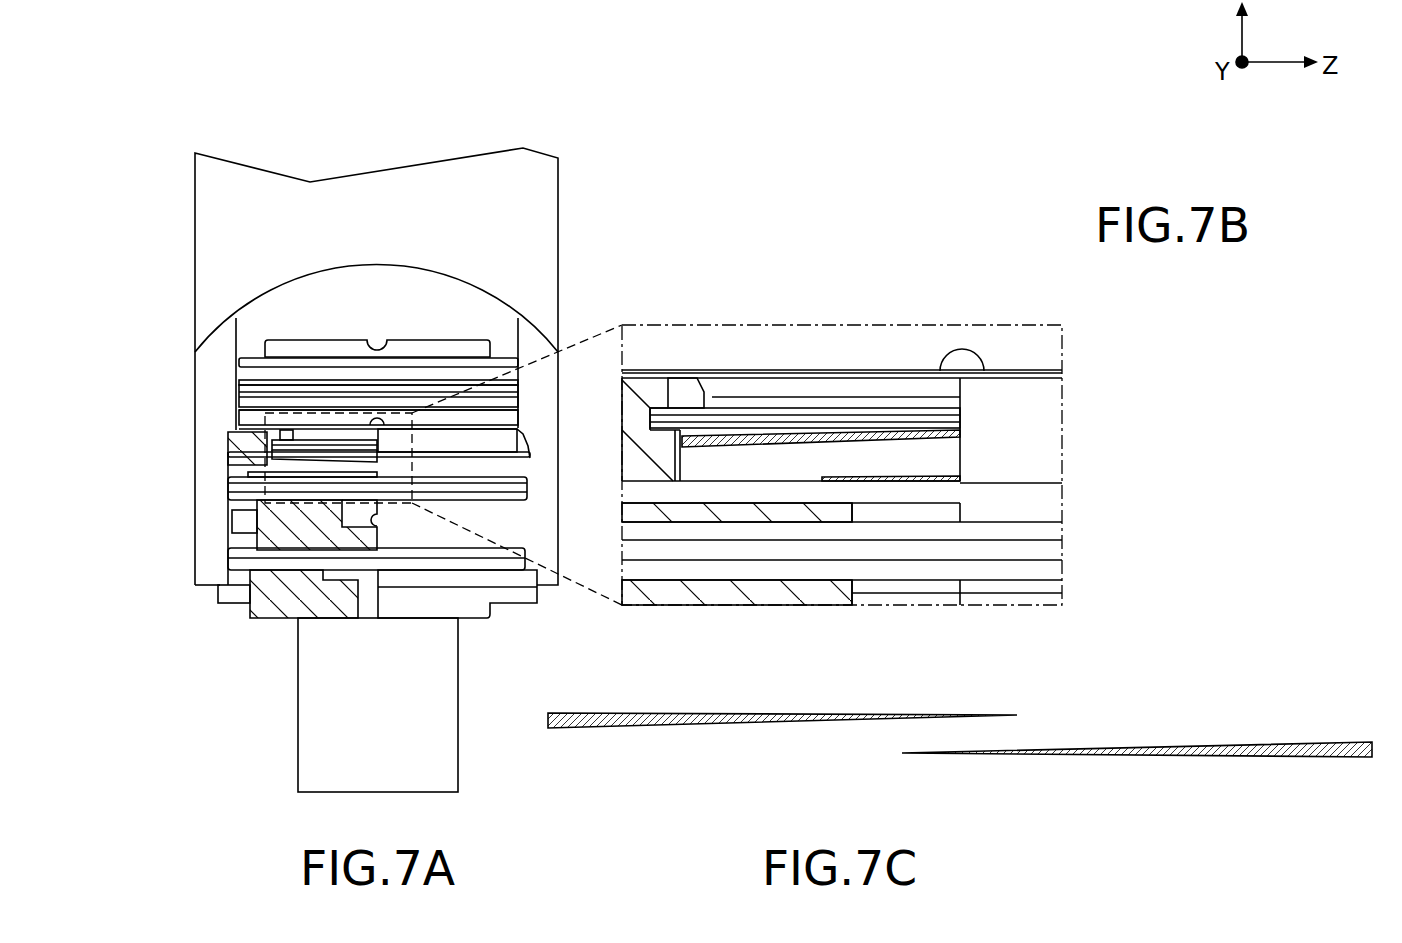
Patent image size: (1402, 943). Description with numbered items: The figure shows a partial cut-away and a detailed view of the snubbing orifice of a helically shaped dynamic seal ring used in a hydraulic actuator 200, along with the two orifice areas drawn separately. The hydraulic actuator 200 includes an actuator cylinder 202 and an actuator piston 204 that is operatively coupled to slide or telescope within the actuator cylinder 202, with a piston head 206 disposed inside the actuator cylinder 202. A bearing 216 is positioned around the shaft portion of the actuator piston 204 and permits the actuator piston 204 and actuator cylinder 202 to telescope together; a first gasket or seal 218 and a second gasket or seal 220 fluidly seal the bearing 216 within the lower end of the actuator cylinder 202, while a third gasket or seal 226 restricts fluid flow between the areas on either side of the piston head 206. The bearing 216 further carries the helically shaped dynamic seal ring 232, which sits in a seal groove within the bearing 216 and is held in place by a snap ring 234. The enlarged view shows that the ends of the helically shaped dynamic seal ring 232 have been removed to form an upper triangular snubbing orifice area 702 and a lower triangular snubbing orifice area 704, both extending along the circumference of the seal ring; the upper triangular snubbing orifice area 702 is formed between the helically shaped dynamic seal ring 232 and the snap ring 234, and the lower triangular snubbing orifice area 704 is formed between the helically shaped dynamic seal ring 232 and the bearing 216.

In FIG. 7A, the hydraulic actuator 200 is at (98, 100).
In FIG. 7A, the actuator cylinder 202 is at (532, 182).
In FIG. 7A, the actuator piston 204 is at (347, 703).
In FIG. 7A, the piston head 206 is at (275, 347).
In FIG. 7A, the bearing 216 is at (288, 592).
In FIG. 7A, the first gasket or seal 218 is at (250, 488).
In FIG. 7A, the second gasket or seal 220 is at (242, 557).
In FIG. 7A, the third gasket or seal 226 is at (245, 392).
In FIG. 7A, the helically shaped dynamic seal ring 232 is at (262, 460).
In FIG. 7B, the helically shaped dynamic seal ring 232 is at (858, 457).
In FIG. 7A, the snap ring 234 is at (282, 440).
In FIG. 7B, the upper triangular snubbing orifice area 702 is at (655, 712).
In FIG. 7C, the upper triangular snubbing orifice area 702 is at (655, 722).
In FIG. 7B, the lower triangular snubbing orifice area 704 is at (925, 502).
In FIG. 7C, the lower triangular snubbing orifice area 704 is at (1212, 747).